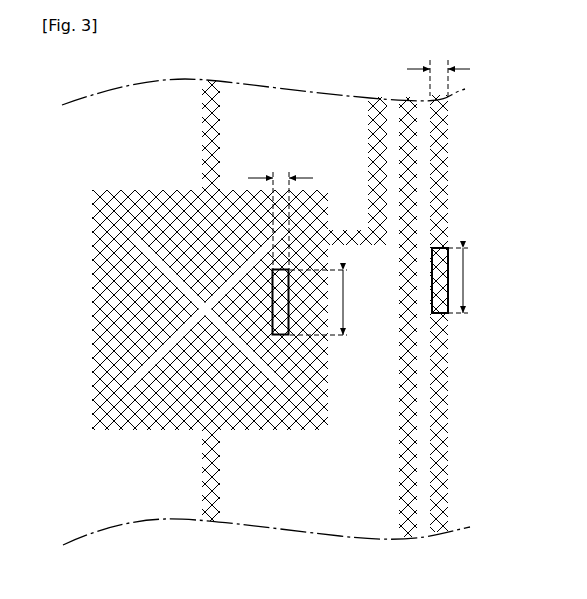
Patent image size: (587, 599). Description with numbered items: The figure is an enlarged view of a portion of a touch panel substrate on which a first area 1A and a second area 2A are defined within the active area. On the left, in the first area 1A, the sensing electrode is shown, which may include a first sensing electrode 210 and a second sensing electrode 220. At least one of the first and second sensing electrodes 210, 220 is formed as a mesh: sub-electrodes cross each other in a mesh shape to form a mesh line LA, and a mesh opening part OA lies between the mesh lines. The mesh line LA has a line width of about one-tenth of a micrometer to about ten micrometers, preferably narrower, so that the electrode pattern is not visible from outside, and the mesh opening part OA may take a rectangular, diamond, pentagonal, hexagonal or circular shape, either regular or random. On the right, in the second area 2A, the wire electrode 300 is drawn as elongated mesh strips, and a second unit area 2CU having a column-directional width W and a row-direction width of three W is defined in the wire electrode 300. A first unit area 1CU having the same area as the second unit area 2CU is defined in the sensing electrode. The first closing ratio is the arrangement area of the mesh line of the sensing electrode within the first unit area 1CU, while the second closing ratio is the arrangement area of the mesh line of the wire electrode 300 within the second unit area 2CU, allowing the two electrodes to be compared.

The first sensing electrode 210 is at (187, 301).
The second sensing electrode 220 is at (170, 243).
The wire electrode 300 is at (369, 127).
The mesh opening part OA is at (118, 300).
The mesh line LA is at (122, 395).
The first unit area 1CU is at (280, 338).
The second unit area 2CU is at (432, 263).
The first area 1A is at (210, 336).
The second area 2A is at (421, 320).